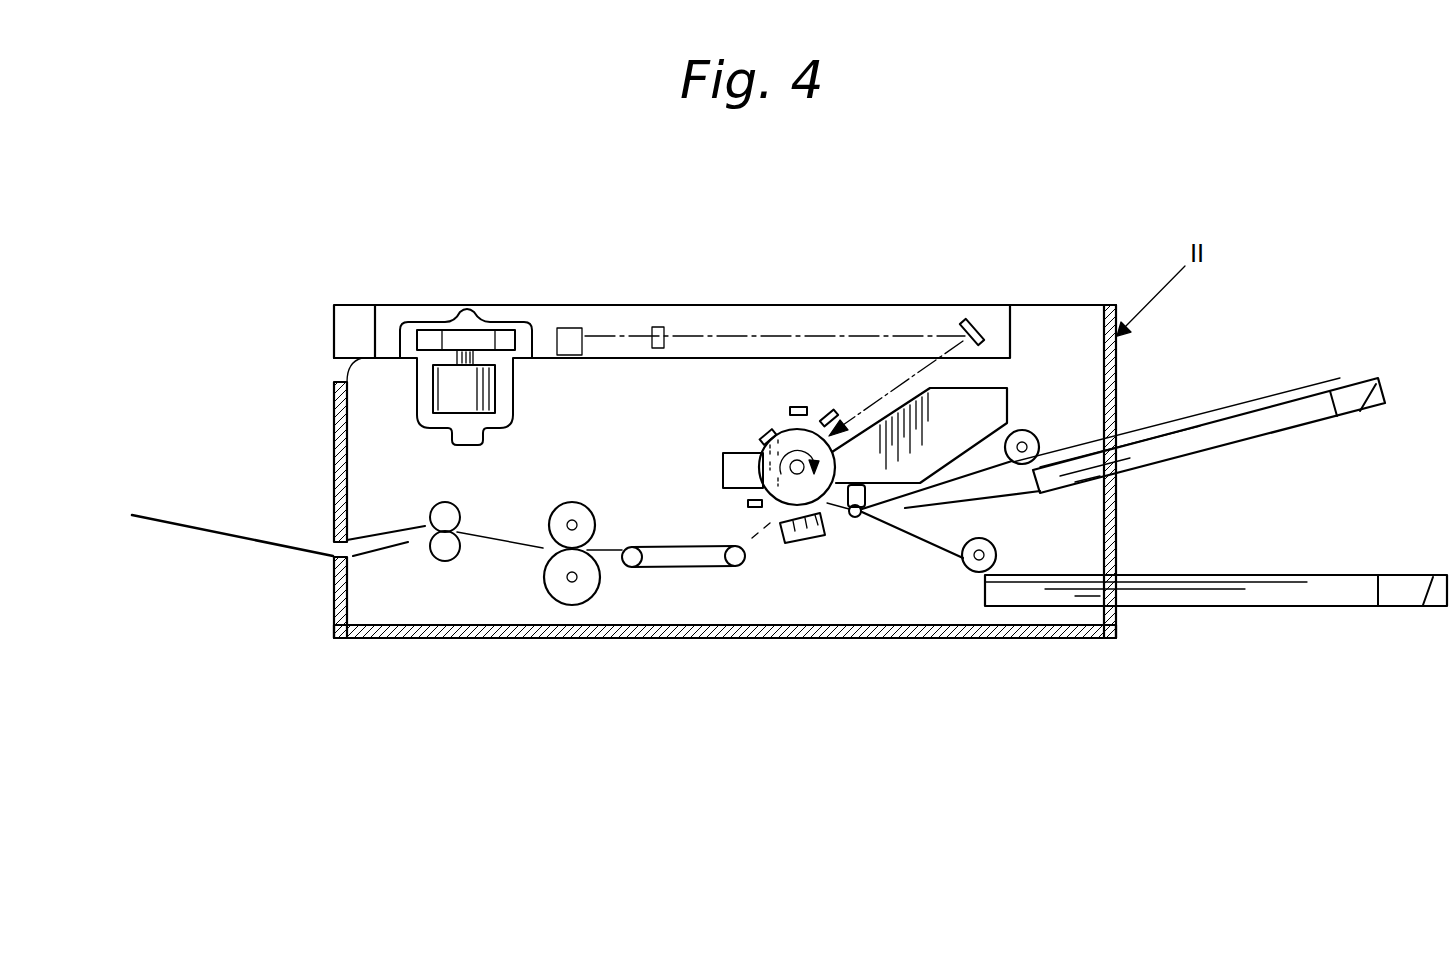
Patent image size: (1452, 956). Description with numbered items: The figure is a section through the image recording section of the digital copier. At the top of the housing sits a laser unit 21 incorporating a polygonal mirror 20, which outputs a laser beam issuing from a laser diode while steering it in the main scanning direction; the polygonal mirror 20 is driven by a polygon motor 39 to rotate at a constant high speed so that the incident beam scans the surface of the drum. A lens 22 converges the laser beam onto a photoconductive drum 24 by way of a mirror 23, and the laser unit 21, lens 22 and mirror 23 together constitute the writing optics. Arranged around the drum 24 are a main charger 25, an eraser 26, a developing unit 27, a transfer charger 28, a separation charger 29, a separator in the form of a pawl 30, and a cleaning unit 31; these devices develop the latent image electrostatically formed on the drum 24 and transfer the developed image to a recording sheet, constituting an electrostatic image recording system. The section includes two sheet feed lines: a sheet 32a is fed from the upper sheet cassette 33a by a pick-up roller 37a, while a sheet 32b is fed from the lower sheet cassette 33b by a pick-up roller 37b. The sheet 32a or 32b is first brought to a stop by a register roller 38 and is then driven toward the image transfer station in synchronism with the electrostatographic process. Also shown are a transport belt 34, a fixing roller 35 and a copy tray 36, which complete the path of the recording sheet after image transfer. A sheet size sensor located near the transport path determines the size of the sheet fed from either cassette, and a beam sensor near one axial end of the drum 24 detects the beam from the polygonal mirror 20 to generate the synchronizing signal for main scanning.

The polygonal mirror 20 is at (481, 322).
The laser unit 21 is at (515, 390).
The lens 22 is at (607, 358).
The mirror 23 is at (978, 322).
The photoconductive drum 24 is at (763, 440).
The main charger 25 is at (797, 406).
The eraser 26 is at (832, 413).
The developing unit 27 is at (1007, 403).
The transfer charger 28 is at (822, 537).
The separation charger 29 is at (783, 543).
The pawl 30 is at (748, 503).
The cleaning unit 31 is at (723, 467).
The sheet 32a is at (1280, 400).
The sheet 32b is at (1280, 575).
The upper sheet cassette 33a is at (1387, 378).
The lower sheet cassette 33b is at (1440, 575).
The transport belt 34 is at (700, 566).
The fixing roller 35 is at (562, 503).
The copy tray 36 is at (240, 541).
The pick-up roller 37a is at (1040, 447).
The pick-up roller 37b is at (997, 550).
The register roller 38 is at (858, 516).
The polygon motor 39 is at (430, 430).